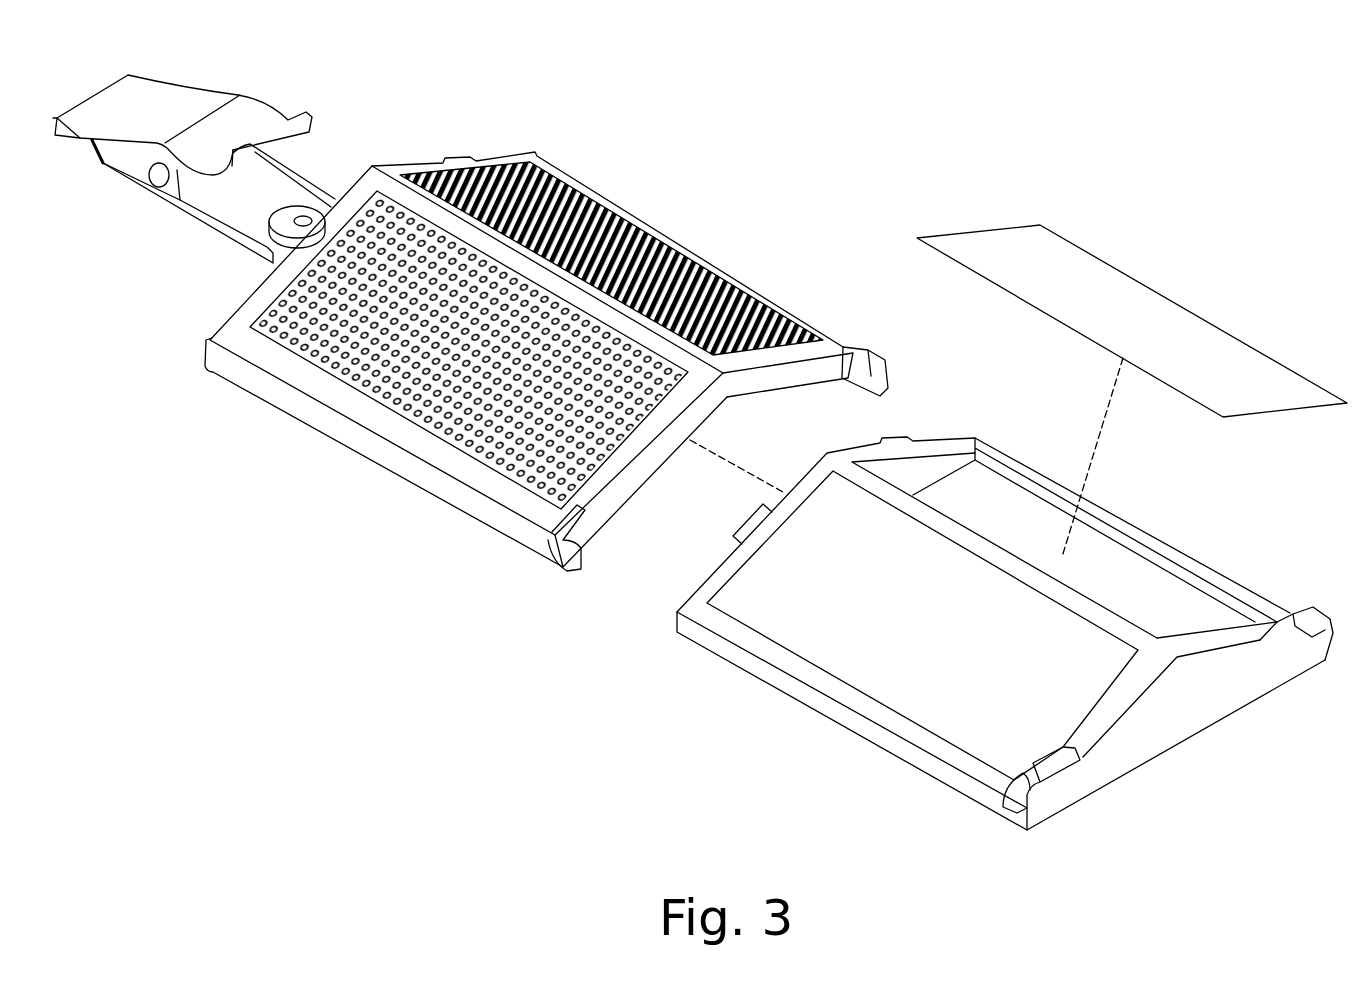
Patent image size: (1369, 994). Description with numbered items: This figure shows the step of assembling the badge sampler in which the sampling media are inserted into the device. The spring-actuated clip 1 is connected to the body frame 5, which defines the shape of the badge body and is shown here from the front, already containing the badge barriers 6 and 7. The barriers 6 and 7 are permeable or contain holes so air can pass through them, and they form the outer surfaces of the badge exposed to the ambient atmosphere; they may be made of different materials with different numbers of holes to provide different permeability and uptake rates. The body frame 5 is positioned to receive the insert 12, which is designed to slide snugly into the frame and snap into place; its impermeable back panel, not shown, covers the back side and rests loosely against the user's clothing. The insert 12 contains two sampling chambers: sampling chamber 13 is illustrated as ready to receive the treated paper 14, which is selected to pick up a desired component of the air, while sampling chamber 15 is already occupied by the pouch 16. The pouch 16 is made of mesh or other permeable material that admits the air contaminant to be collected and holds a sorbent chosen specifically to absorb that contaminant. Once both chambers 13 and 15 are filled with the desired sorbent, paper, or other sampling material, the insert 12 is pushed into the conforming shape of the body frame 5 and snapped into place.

The spring-actuated clip 1 is at (178, 97).
The body frame 5 is at (492, 152).
The badge barrier 6 is at (643, 247).
The badge barrier 7 is at (392, 371).
The insert 12 is at (738, 632).
The sampling chamber 13 is at (1132, 582).
The treated paper 14 is at (1113, 288).
The sampling chamber 15 is at (908, 683).
The pouch 16 is at (940, 640).